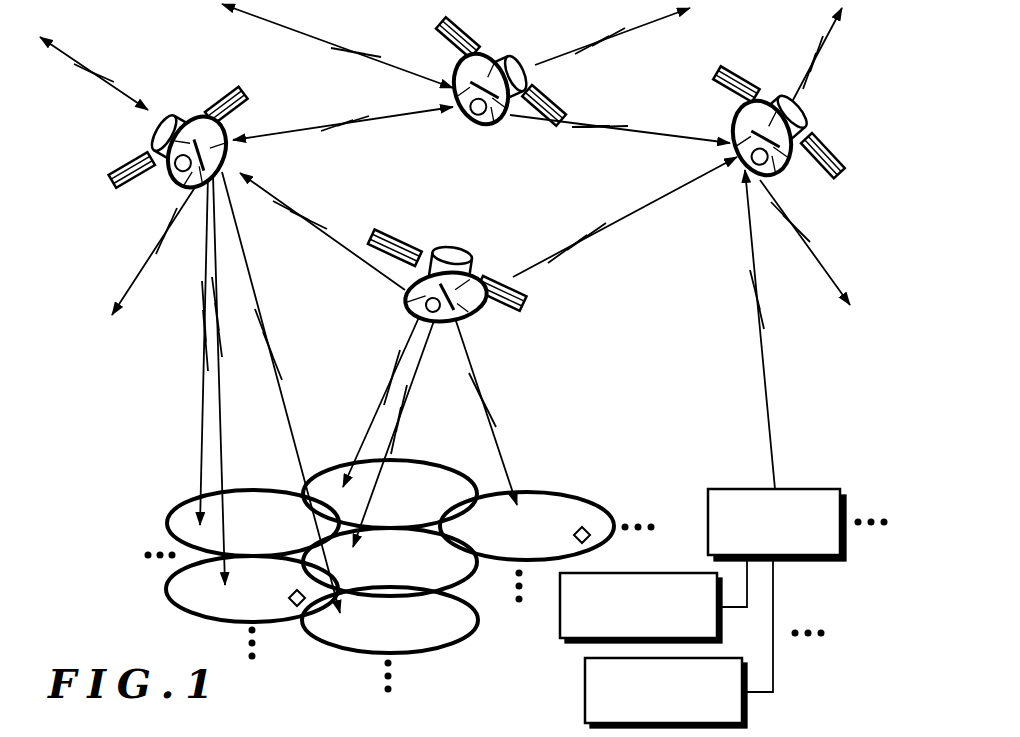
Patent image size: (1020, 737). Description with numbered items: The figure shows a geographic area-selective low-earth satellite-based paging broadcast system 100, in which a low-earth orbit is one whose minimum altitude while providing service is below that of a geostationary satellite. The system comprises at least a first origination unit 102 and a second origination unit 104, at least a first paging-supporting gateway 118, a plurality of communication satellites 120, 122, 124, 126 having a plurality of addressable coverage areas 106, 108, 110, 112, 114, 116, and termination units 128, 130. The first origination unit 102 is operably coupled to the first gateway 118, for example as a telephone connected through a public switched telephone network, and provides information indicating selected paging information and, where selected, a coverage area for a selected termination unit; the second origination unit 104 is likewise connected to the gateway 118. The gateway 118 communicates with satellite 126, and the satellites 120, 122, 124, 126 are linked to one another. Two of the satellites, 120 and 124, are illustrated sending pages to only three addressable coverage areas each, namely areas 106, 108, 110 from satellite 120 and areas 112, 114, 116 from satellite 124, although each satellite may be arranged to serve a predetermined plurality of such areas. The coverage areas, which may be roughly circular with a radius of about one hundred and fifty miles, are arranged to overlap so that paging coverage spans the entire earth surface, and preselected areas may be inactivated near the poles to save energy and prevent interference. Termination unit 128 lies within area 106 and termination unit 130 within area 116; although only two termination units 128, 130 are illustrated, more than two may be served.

The geographic area-selective low-earth satellite-based paging broadcast system 100 is at (108, 642).
The first origination unit 102 is at (560, 613).
The second origination unit 104 is at (585, 700).
The addressable coverage area ACA1-1 106 is at (200, 614).
The addressable coverage area ACA1-2 108 is at (184, 500).
The addressable coverage area ACA1-3 110 is at (370, 655).
The addressable coverage area ACA2-1 112 is at (438, 464).
The addressable coverage area ACA2-2 114 is at (472, 575).
The addressable coverage area ACA2-3 116 is at (571, 495).
The first paging-supporting gateway 118 is at (818, 560).
The communication satellite 120 is at (150, 140).
The communication satellite 122 is at (514, 56).
The communication satellite 124 is at (455, 252).
The communication satellite 126 is at (800, 110).
The first termination unit 128 is at (297, 607).
The second termination unit 130 is at (590, 541).